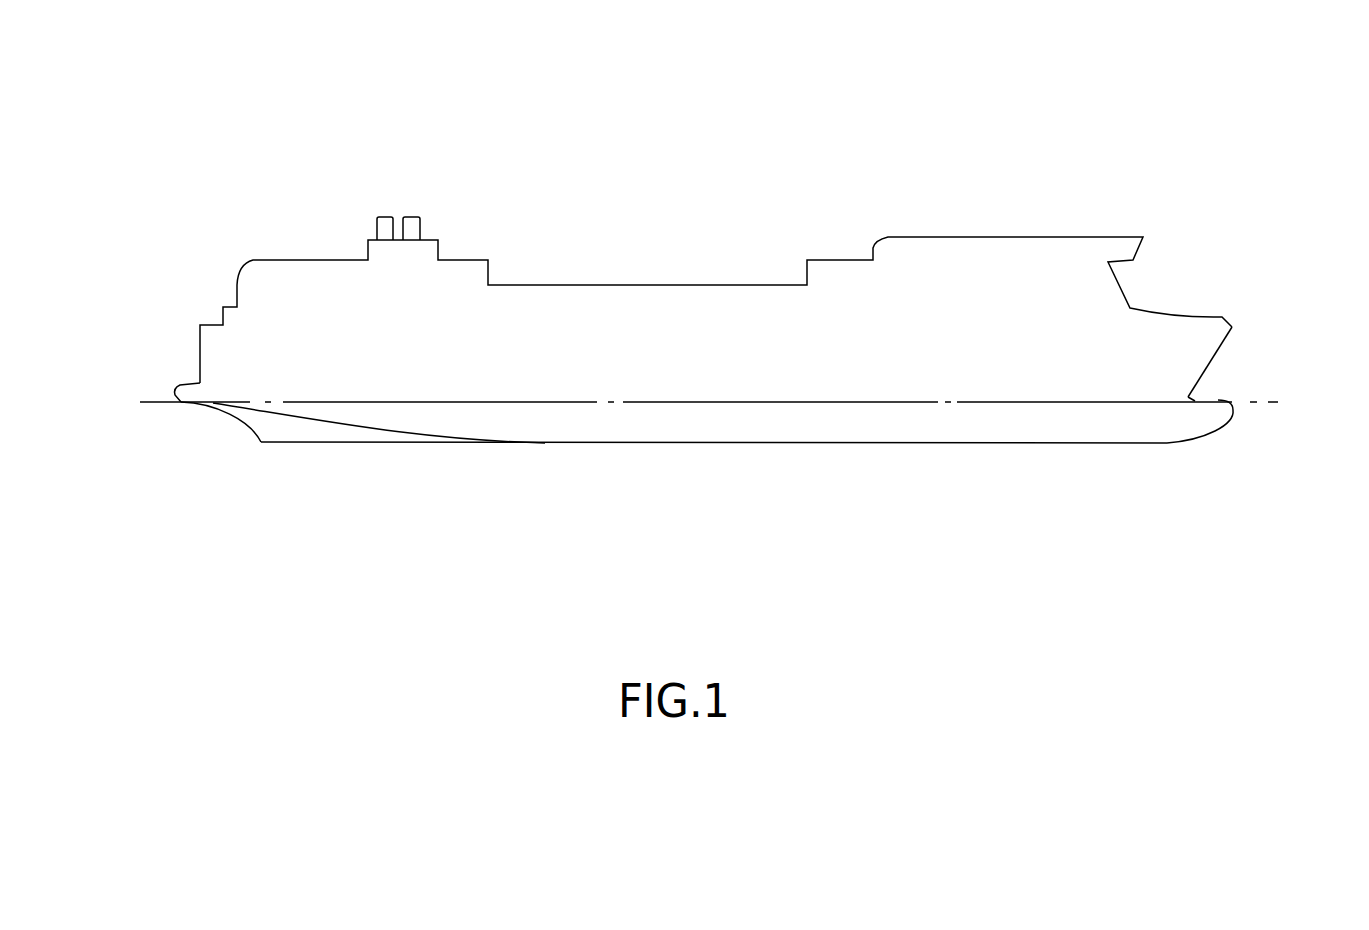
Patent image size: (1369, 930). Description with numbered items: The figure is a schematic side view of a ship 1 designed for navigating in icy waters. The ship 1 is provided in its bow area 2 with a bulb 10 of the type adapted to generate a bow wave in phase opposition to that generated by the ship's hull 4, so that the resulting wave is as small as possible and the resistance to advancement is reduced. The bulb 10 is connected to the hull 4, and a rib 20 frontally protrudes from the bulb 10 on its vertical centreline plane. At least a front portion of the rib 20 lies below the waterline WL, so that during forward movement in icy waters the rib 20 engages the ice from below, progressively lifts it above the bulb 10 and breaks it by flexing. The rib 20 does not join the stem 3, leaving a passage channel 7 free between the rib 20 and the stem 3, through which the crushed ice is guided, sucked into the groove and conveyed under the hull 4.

The ship 1 is at (611, 195).
The bow area 2 is at (1291, 331).
The stem 3 is at (1222, 344).
The ship's hull 4 is at (877, 423).
The passage channel 7 is at (1190, 393).
The bulb 10 is at (1195, 421).
The rib 20 is at (1220, 394).
The waterline WL is at (157, 401).